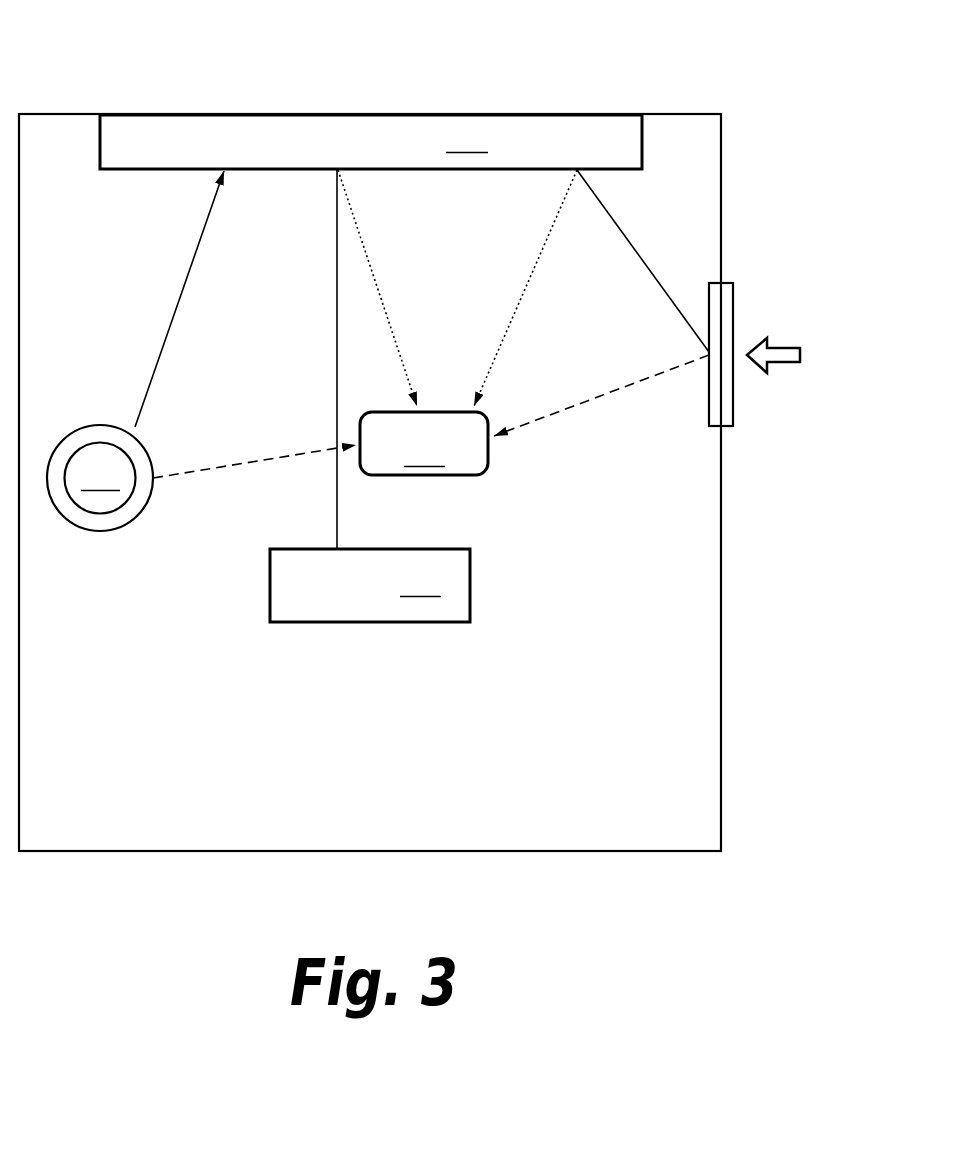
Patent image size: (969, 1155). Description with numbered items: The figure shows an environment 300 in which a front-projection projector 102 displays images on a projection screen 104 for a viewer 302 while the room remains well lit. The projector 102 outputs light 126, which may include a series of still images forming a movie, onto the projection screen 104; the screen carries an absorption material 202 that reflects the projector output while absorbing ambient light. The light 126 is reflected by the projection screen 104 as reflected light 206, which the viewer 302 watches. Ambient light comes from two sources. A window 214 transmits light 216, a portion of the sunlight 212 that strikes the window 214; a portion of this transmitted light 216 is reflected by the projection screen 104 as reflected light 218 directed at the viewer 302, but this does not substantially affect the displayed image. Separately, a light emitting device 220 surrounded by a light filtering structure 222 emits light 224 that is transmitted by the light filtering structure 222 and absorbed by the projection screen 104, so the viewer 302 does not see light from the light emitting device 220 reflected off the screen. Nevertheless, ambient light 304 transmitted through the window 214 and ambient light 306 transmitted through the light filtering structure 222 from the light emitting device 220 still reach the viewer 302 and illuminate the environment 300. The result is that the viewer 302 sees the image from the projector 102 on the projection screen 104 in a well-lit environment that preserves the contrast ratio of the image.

The environment 300 is at (150, 36).
The absorption material 202 is at (595, 114).
The projection screen 104 is at (371, 142).
The projector 102 is at (370, 585).
The light 126 is at (338, 502).
The viewer 302 is at (424, 443).
The reflected light 206 is at (375, 275).
The reflected light 218 is at (548, 233).
The transmitted light 216 is at (689, 331).
The ambient light 304 is at (660, 374).
The ambient light 306 is at (315, 450).
The light 224 is at (177, 303).
The light emitting device 220 is at (100, 478).
The light filtering structure 222 is at (101, 424).
The window 214 is at (722, 284).
The sunlight 212 is at (775, 346).